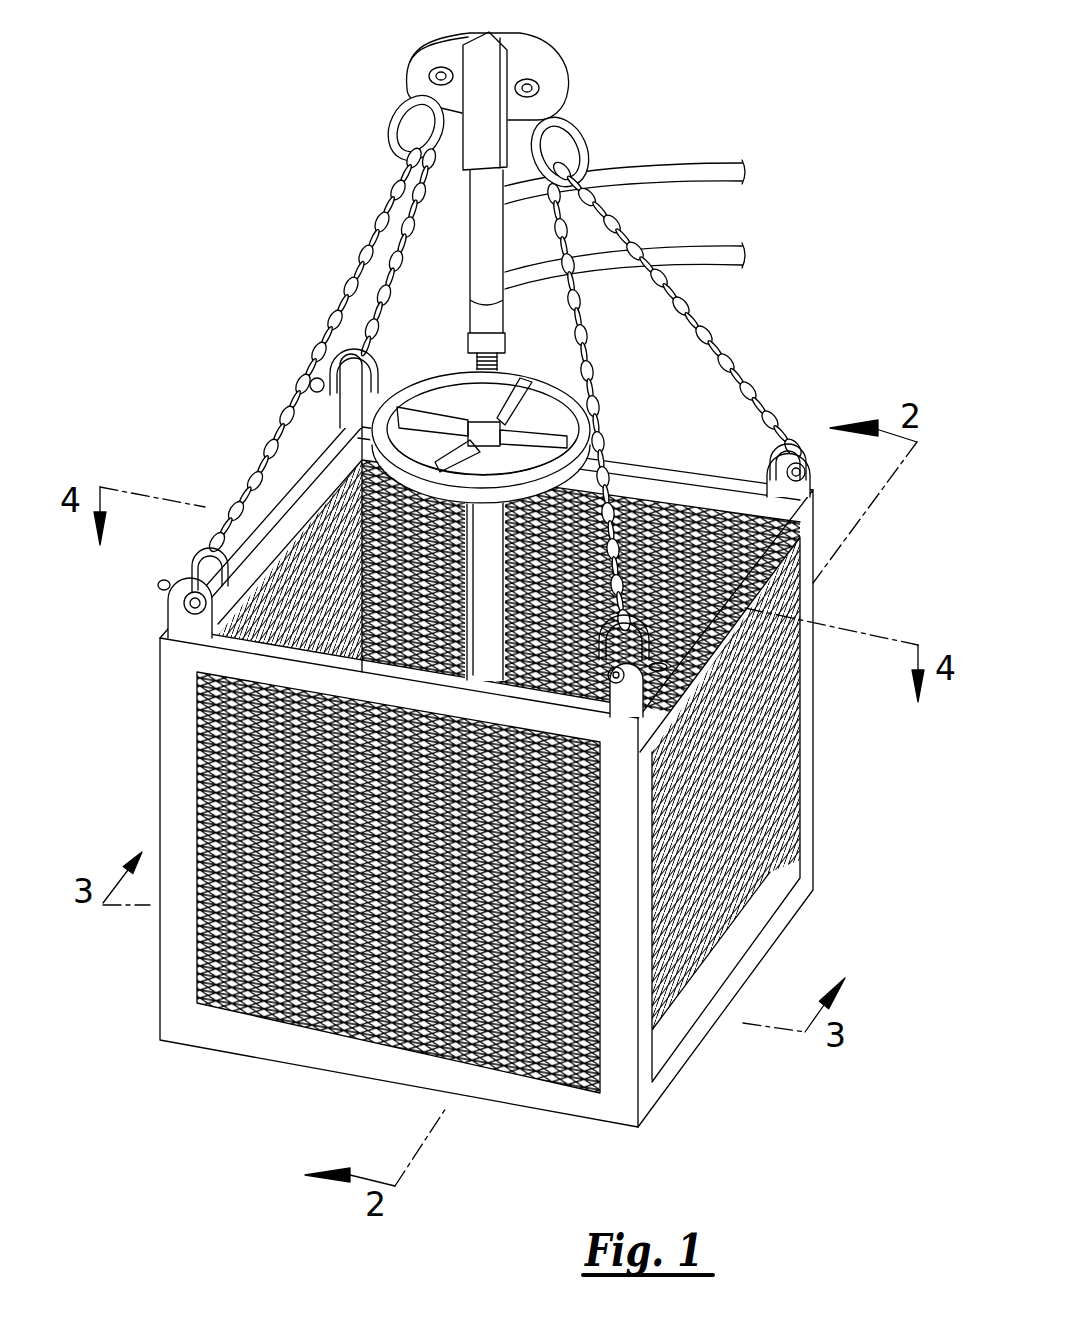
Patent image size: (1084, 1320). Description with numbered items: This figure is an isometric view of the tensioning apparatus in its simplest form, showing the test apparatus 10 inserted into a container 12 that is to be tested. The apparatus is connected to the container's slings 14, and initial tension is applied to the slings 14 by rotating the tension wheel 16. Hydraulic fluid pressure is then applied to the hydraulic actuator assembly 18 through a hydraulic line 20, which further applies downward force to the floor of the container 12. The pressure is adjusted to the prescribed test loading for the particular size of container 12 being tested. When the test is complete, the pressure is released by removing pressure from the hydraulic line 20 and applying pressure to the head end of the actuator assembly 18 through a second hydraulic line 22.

The test apparatus 10 is at (260, 254).
The container 12 is at (826, 806).
The slings 14 is at (725, 362).
The tension wheel 16 is at (457, 385).
The hydraulic actuator assembly 18 is at (500, 275).
The hydraulic line 20 is at (680, 168).
The hydraulic line 22 is at (722, 250).